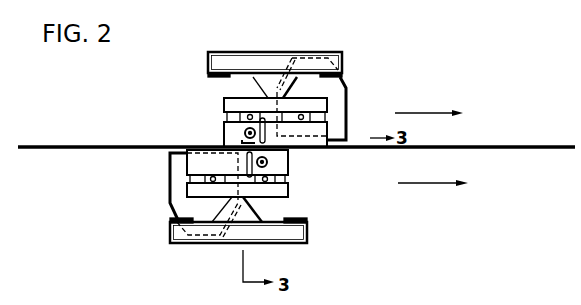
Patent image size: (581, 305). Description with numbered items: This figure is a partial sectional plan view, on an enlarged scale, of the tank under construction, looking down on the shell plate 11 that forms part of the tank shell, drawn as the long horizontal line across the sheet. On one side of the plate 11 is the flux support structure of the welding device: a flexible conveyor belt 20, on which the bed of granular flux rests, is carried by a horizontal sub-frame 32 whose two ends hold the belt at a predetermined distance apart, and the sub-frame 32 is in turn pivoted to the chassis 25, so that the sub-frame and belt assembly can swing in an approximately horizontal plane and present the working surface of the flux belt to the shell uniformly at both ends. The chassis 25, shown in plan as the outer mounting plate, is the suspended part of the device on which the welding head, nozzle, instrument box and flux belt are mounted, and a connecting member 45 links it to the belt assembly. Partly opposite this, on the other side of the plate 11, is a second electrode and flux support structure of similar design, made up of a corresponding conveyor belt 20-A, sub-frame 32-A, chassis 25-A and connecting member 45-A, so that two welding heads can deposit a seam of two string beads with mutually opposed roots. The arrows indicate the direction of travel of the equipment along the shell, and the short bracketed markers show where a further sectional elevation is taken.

The vertical plate 11 is at (90, 146).
The upper mounting plate 25-A is at (342, 56).
The upper bracket 45-A is at (347, 88).
The upper support plate 32-A is at (224, 104).
The upper module block 20-A is at (224, 128).
The conveyor belt 20 is at (289, 162).
The sub-frame 32 is at (289, 190).
The lower bracket 45 is at (169, 188).
The chassis 25 is at (170, 228).